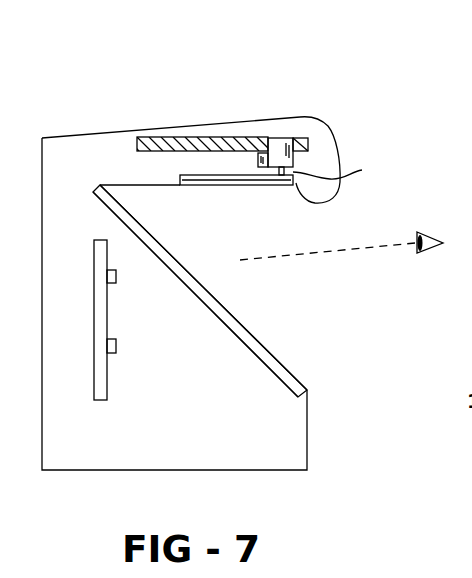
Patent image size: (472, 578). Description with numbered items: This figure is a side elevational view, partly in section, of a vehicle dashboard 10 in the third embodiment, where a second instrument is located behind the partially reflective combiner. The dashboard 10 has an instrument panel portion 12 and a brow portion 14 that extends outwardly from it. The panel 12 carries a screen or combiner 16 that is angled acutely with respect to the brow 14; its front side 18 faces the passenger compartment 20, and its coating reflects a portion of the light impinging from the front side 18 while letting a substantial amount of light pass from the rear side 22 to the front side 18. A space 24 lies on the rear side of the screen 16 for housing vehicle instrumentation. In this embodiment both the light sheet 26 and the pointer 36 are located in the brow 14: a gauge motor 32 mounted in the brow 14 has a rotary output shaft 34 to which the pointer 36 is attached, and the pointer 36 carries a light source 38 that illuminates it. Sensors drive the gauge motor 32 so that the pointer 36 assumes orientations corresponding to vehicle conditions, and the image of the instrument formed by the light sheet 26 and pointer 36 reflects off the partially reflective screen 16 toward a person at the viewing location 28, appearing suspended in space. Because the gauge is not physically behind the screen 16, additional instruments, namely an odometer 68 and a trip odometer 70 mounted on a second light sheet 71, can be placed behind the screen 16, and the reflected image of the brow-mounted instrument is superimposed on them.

The vehicle dashboard 10 is at (136, 120).
The instrument panel portion 12 is at (316, 381).
The brow portion 14 is at (344, 118).
The screen or combiner 16 is at (266, 350).
The front side 18 is at (238, 316).
The passenger compartment 20 is at (343, 279).
The rear side 22 is at (220, 327).
The space 24 is at (134, 444).
The light sheet 26 is at (180, 142).
The viewing location 28 is at (429, 252).
The gauge motor 32 is at (280, 142).
The rotary output shaft 34 is at (341, 170).
The pointer 36 is at (230, 184).
The light source 38 is at (262, 152).
The odometer 68 is at (117, 276).
The trip odometer 70 is at (117, 345).
The second light sheet 71 is at (93, 318).